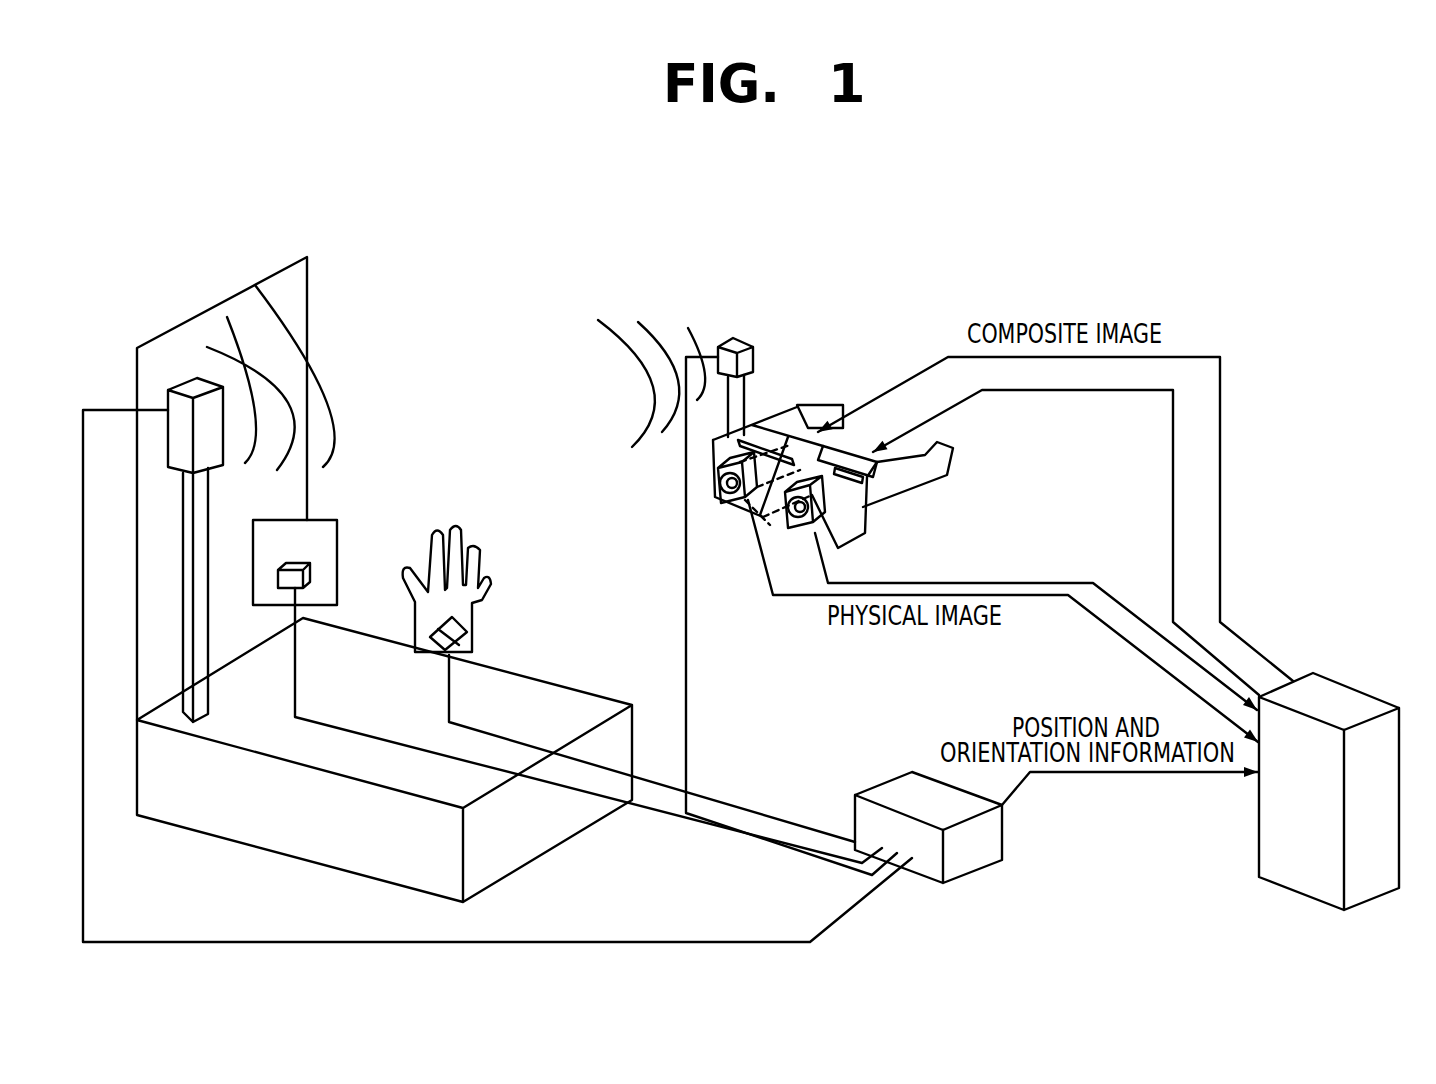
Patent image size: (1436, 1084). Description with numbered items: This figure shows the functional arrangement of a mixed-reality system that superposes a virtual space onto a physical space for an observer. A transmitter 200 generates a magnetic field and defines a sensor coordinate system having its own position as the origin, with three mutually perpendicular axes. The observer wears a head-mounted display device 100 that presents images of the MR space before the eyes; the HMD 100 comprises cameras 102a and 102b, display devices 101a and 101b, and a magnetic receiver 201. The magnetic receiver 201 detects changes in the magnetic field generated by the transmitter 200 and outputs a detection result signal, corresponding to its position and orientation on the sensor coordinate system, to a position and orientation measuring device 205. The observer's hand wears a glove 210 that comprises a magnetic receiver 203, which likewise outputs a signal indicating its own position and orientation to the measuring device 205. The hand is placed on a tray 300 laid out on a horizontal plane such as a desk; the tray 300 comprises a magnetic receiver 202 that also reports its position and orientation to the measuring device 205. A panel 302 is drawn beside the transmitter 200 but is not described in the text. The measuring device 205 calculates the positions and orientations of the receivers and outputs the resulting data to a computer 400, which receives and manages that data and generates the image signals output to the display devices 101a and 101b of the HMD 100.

The head-mounted display device 100 is at (917, 488).
The display device 101a is at (800, 405).
The display device 101b is at (898, 458).
The camera 102a is at (730, 495).
The camera 102b is at (813, 527).
The transmitter 200 is at (185, 388).
The magnetic receiver 201 is at (742, 340).
The magnetic receiver 202 is at (282, 590).
The magnetic receiver 203 is at (462, 628).
The position and orientation measuring device 205 is at (967, 877).
The glove 210 is at (477, 542).
The tray 300 is at (317, 520).
The wall (background physical object) 302 is at (273, 268).
The computer 400 is at (1356, 700).